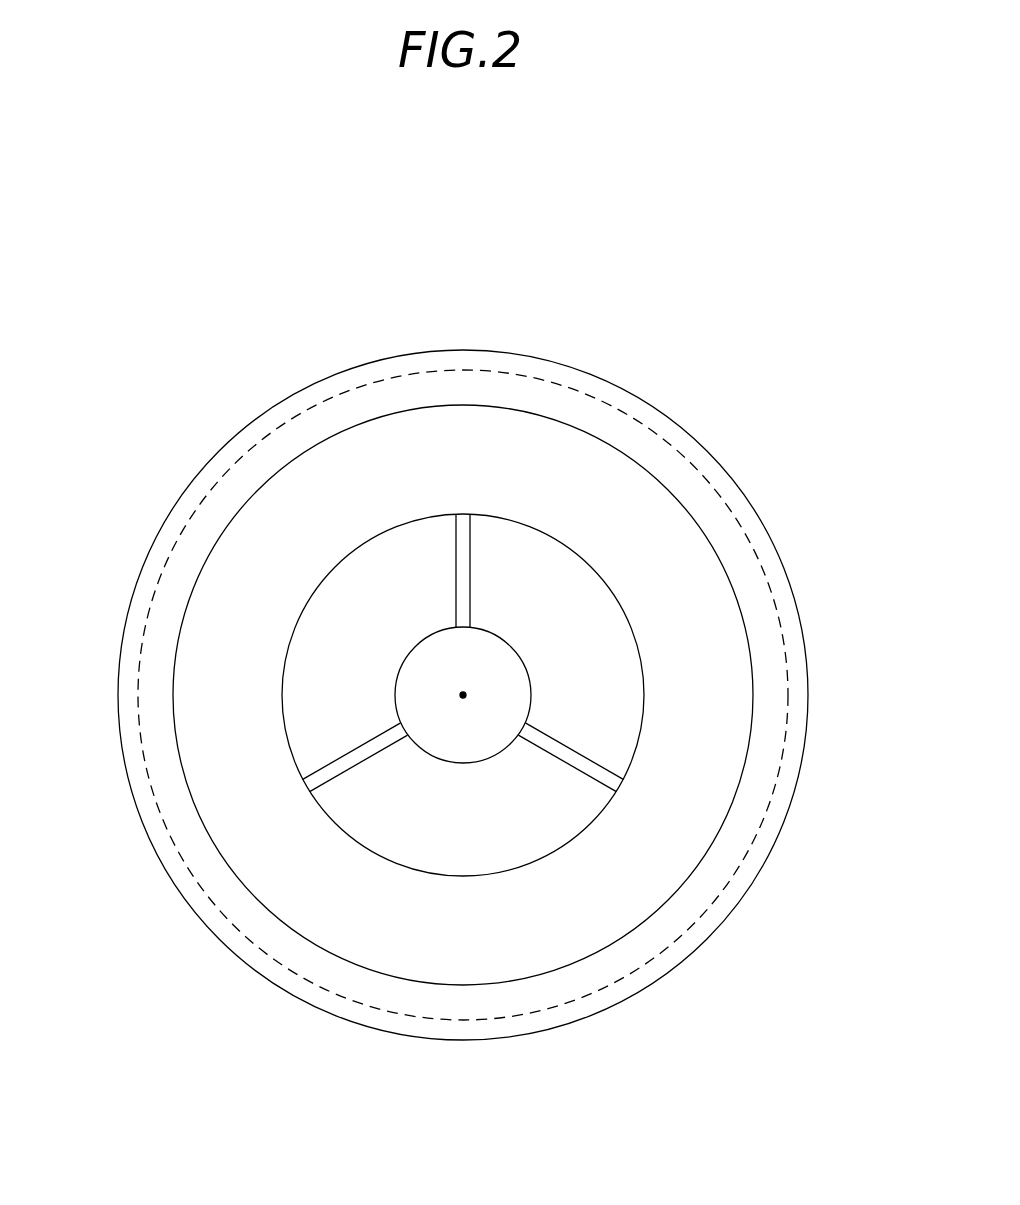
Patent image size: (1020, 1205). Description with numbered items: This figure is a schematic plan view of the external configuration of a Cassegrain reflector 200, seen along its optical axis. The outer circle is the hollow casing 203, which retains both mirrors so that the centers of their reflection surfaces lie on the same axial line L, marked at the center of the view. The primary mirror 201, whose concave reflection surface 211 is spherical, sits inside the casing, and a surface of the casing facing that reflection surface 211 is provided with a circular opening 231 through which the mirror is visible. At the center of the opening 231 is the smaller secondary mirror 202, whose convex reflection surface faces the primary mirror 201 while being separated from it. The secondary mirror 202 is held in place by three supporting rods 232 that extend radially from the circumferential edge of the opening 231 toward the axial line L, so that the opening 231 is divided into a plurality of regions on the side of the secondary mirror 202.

The Cassegrain reflector 200 is at (523, 298).
The primary mirror 201 is at (340, 393).
The secondary mirror 202 is at (488, 760).
The casing 203 is at (760, 513).
The reflection surface 211 is at (550, 583).
The opening 231 is at (458, 876).
The supporting rods 232 is at (456, 570).
The axial line L is at (463, 695).